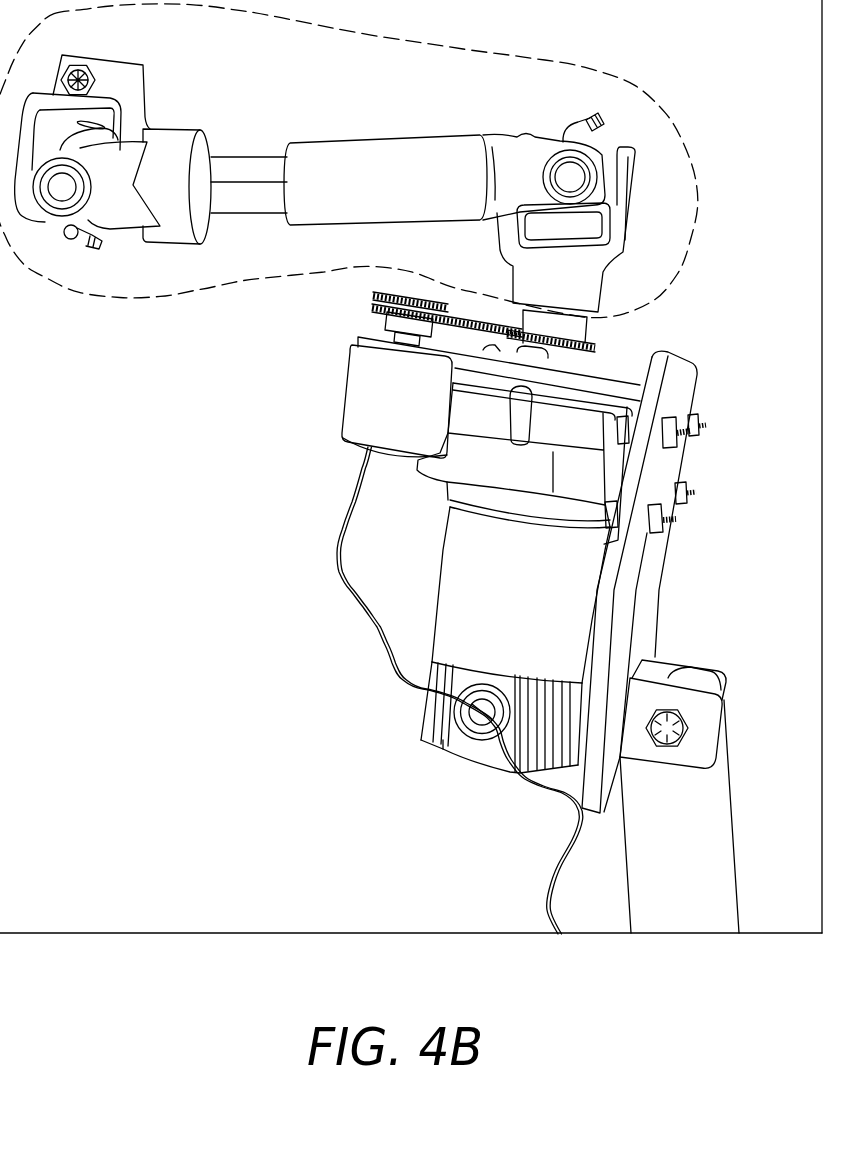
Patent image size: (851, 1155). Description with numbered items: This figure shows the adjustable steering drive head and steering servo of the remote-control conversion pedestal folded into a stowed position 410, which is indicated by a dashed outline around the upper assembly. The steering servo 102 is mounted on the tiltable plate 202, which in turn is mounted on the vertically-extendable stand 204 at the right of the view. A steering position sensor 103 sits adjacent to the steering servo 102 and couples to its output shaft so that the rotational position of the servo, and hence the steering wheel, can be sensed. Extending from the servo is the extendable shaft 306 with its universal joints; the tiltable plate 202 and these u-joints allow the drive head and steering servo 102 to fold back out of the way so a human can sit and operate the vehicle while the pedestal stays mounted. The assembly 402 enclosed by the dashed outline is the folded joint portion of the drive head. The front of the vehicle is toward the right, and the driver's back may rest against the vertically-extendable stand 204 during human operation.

The stowed position 410 is at (599, 45).
The drive shaft assembly 402 is at (384, 199).
The extendable shaft 306 is at (327, 148).
The steering position sensor 103 is at (357, 388).
The steering servo 102 is at (441, 562).
The tiltable plate 202 is at (667, 567).
The vertically-extendable stand 204 is at (641, 880).